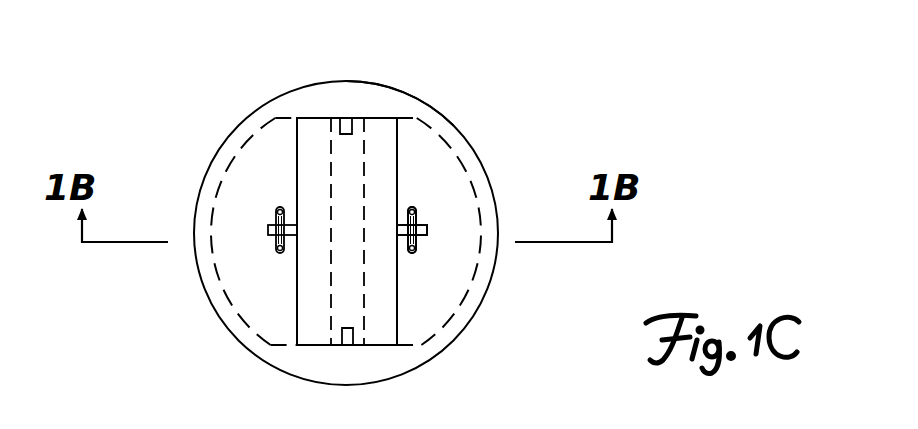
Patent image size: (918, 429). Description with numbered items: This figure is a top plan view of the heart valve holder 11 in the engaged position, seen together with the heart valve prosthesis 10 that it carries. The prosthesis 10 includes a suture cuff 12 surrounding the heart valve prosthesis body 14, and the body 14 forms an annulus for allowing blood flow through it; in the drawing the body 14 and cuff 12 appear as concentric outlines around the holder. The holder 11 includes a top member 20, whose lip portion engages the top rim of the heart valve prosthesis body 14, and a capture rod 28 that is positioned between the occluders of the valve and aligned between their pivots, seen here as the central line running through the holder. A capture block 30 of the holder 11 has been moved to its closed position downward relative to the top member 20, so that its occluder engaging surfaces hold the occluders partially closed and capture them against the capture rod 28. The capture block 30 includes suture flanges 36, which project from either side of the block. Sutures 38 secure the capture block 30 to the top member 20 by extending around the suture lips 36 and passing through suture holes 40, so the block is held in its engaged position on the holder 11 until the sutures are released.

The heart valve prosthesis 10 is at (339, 222).
The heart valve holder 11 is at (339, 222).
The suture cuff 12 is at (377, 368).
The heart valve prosthesis body 14 is at (462, 300).
The top member 20 is at (399, 103).
The capture rod 28 is at (328, 288).
The capture block 30 is at (315, 173).
The suture flanges 36 is at (268, 230).
The sutures 38 is at (277, 212).
The suture holes 40 is at (422, 208).